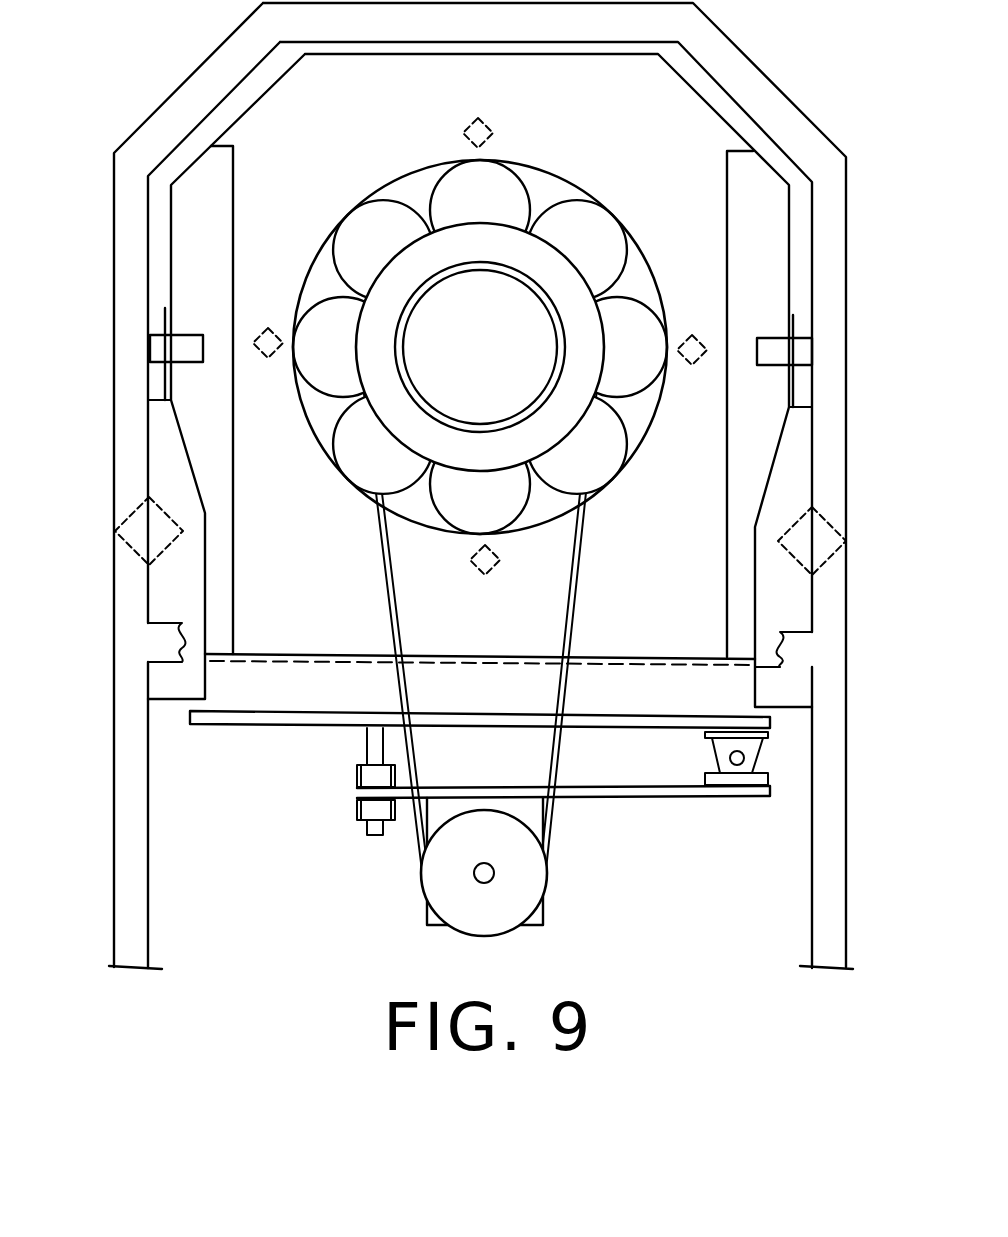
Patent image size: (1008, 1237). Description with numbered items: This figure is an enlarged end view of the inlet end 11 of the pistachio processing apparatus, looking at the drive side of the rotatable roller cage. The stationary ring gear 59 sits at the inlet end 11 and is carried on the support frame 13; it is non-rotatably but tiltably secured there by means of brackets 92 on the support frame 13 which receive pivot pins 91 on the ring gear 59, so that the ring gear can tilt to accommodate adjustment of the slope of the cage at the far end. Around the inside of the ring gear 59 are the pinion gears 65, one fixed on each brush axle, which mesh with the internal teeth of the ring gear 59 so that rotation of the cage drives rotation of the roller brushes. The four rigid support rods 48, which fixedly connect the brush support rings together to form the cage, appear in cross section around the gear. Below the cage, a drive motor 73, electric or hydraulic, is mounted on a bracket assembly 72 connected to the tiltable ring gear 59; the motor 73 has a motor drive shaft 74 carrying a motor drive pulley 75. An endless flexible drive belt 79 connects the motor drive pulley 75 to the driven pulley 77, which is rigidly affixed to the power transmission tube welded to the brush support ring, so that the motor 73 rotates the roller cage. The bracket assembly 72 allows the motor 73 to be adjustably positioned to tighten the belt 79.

The inlet end 11 is at (495, 361).
The support frame 13 is at (847, 576).
The support rods 48 is at (492, 124).
The ring gear 59 is at (617, 176).
The pinion gear 65 is at (604, 239).
The bracket assembly 72 is at (635, 803).
The drive motor 73 is at (545, 915).
The motor drive shaft 74 is at (494, 872).
The motor drive pulley 75 is at (483, 923).
The driven pulley 77 is at (553, 423).
The drive belt 79 is at (548, 828).
The pivot pins 91 is at (153, 343).
The brackets 92 is at (158, 385).